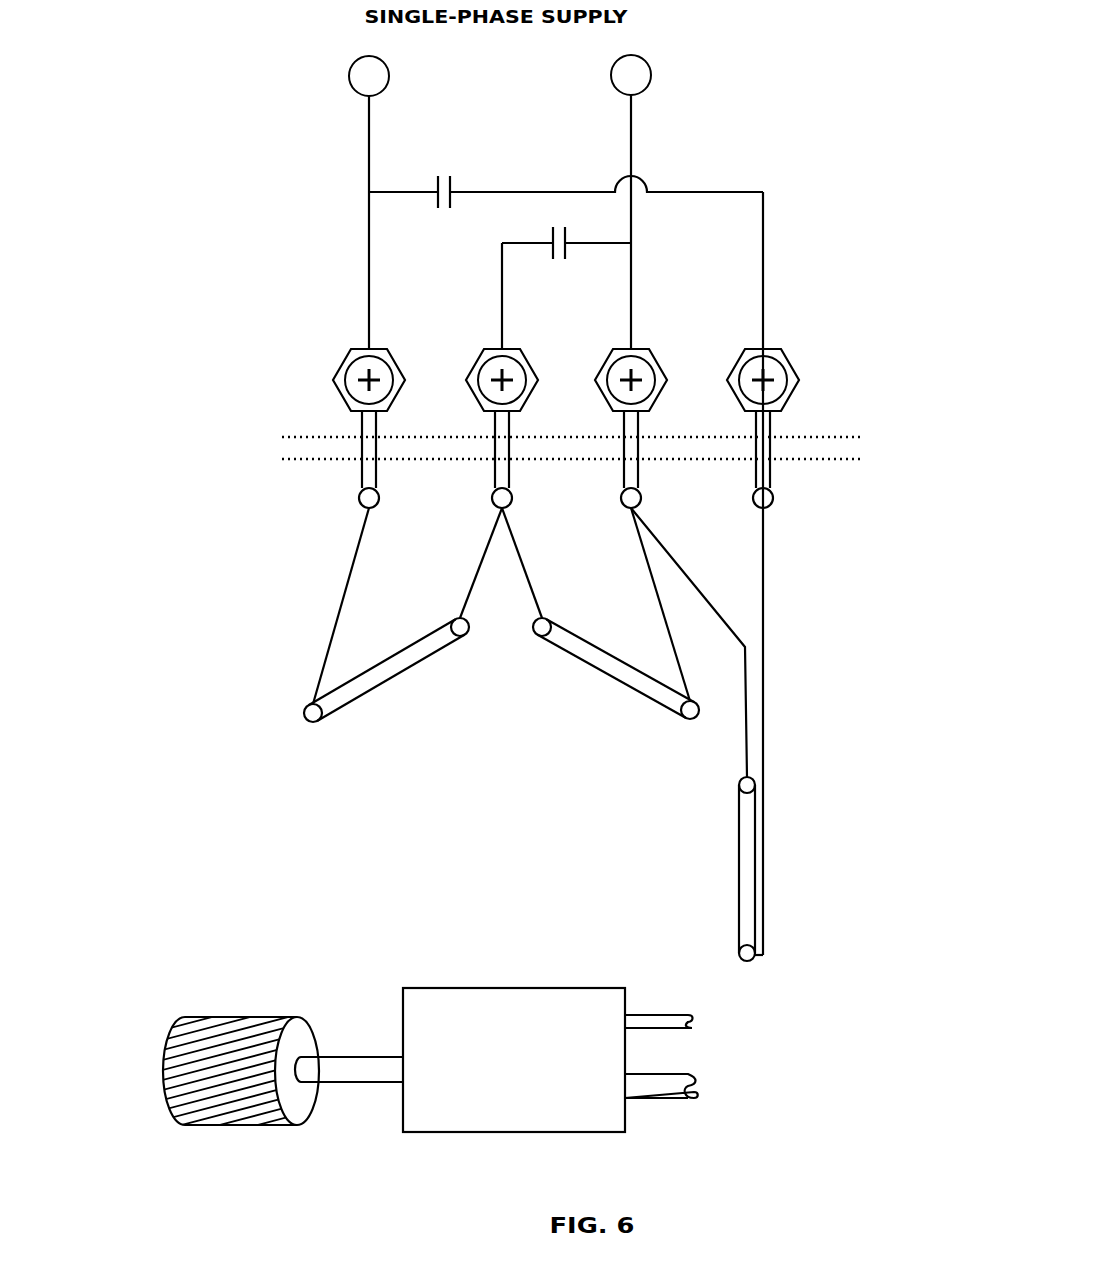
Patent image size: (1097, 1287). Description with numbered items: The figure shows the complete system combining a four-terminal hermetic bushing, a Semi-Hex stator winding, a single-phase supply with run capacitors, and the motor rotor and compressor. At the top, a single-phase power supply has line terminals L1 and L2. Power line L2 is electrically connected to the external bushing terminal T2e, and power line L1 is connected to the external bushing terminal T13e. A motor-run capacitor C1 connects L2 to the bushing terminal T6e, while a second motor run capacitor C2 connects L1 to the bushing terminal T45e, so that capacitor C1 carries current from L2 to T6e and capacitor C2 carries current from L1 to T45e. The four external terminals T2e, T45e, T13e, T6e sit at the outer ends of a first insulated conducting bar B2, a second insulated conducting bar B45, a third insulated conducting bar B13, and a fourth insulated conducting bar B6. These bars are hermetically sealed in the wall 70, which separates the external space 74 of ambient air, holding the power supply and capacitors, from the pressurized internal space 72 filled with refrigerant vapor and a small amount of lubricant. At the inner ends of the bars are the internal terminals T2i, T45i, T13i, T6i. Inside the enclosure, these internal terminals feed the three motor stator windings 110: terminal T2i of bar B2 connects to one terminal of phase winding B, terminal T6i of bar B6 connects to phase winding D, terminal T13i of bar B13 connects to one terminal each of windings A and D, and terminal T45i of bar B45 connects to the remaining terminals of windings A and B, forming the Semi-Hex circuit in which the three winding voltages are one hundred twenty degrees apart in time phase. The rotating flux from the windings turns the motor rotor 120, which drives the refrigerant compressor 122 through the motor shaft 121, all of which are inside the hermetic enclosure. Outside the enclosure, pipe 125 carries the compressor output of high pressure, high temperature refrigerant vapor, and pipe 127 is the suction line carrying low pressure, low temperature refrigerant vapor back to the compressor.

The wall 70 is at (293, 475).
The internal space 72 is at (845, 473).
The external space 74 is at (842, 408).
The three motor stator windings 110 is at (627, 750).
The motor rotor 120 is at (202, 1079).
The motor shaft 121 is at (342, 1095).
The refrigerant compressor 122 is at (514, 1060).
The pipe 125 is at (772, 1010).
The pipe 127 is at (766, 1105).
The power supply terminal L1 is at (631, 202).
The power supply terminal L2 is at (369, 202).
The motor-run capacitor C1 is at (566, 204).
The motor run capacitor C2 is at (566, 255).
The external bushing terminal T2e is at (335, 360).
The external bushing terminal T45e is at (467, 357).
The external bushing terminal T13e is at (598, 357).
The external bushing terminal T6e is at (728, 357).
The first insulated conducting bar B2 is at (358, 473).
The second insulated conducting bar B45 is at (492, 473).
The third insulated conducting bar B13 is at (620, 473).
The fourth insulated conducting bar B6 is at (748, 470).
The internal bushing terminal T2i is at (358, 513).
The internal bushing terminal T45i is at (492, 513).
The internal bushing terminal T13i is at (620, 513).
The internal bushing terminal T6i is at (753, 513).